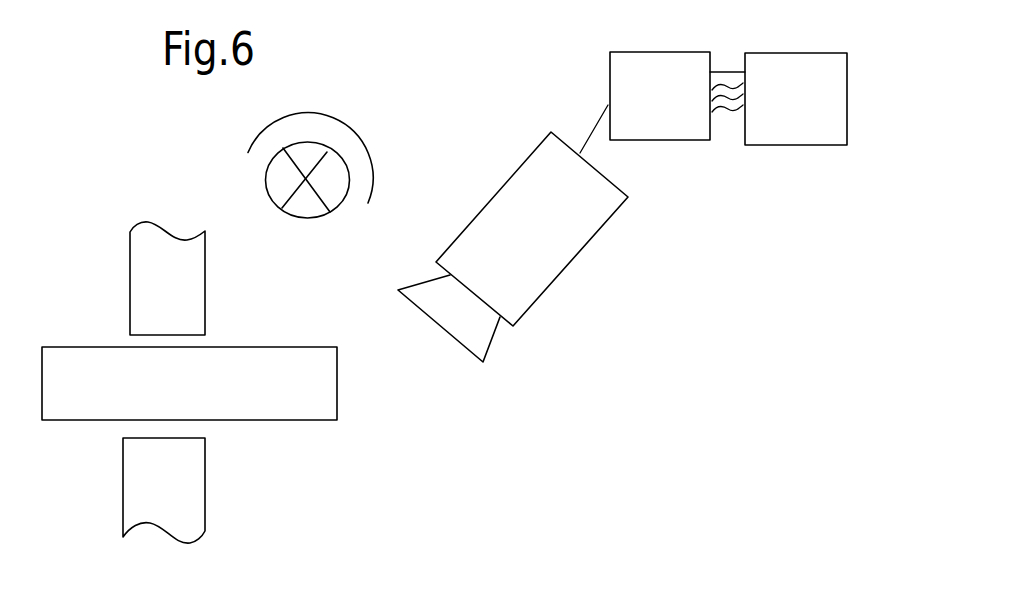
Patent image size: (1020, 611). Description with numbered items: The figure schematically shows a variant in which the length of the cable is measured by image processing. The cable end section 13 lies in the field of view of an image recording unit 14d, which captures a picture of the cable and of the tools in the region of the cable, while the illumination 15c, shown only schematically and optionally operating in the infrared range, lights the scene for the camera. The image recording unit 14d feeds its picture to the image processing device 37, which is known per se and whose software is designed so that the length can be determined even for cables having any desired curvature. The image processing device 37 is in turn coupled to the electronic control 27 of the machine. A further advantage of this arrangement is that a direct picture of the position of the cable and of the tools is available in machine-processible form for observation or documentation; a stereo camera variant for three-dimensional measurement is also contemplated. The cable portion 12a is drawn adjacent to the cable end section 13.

The illumination 15c is at (332, 118).
The cable end section 13 is at (189, 383).
The web / substrate 12a is at (182, 493).
The image recording unit 14d is at (572, 242).
The image processing device 37 is at (660, 96).
The electronic control 27 is at (796, 99).